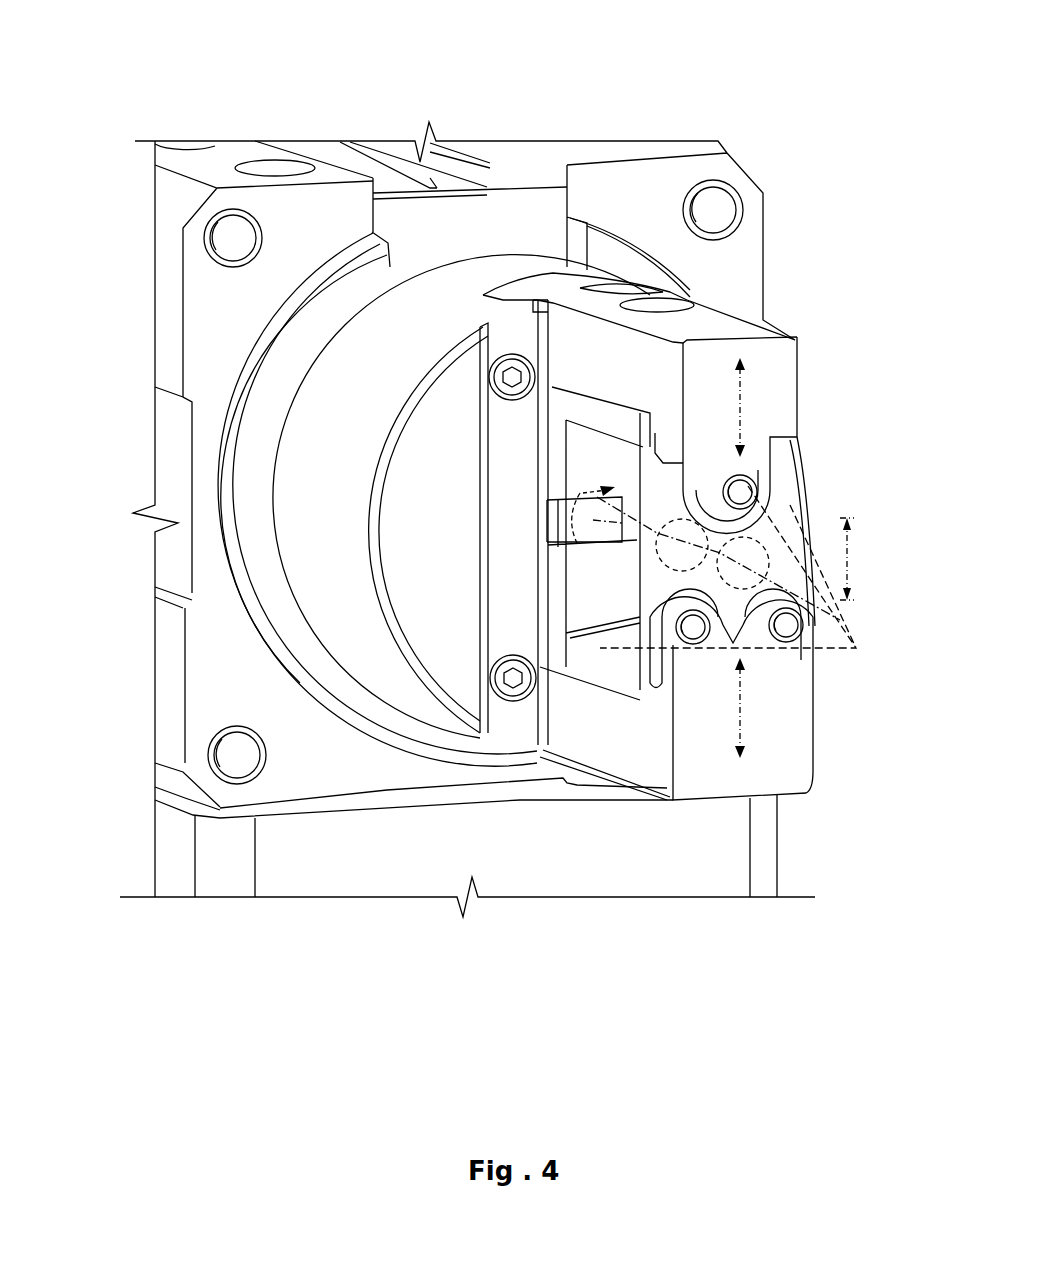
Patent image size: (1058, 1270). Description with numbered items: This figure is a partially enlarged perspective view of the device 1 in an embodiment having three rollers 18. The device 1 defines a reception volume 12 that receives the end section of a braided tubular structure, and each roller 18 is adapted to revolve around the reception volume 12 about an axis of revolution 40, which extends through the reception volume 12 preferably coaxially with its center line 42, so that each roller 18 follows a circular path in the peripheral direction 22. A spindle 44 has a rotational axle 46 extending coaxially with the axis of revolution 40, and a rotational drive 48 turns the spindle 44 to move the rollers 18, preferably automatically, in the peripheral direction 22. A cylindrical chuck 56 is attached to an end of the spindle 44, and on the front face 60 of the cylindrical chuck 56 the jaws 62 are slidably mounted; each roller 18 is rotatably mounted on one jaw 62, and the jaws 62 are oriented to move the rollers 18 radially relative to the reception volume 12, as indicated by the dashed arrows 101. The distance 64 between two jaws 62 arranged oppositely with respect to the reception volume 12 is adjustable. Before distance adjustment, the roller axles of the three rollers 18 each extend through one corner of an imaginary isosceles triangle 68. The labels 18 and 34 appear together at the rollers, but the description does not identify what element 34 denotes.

The device 1 is at (805, 45).
The reception volume 12 is at (755, 519).
The roller 18 is at (747, 699).
The guide roller 34 is at (758, 462).
The peripheral direction 22 is at (575, 527).
The axis of revolution 40 is at (571, 645).
The center line 42 is at (571, 645).
The rotational axle 46 is at (665, 530).
The spindle 44 is at (122, 557).
The rotational drive 48 is at (227, 147).
The cylindrical chuck 56 is at (487, 272).
The front face 60 is at (453, 432).
The jaw 62 is at (780, 389).
The distance 64 is at (845, 561).
The imaginary isosceles triangle 68 is at (836, 650).
The dashed arrows 101 is at (780, 415).